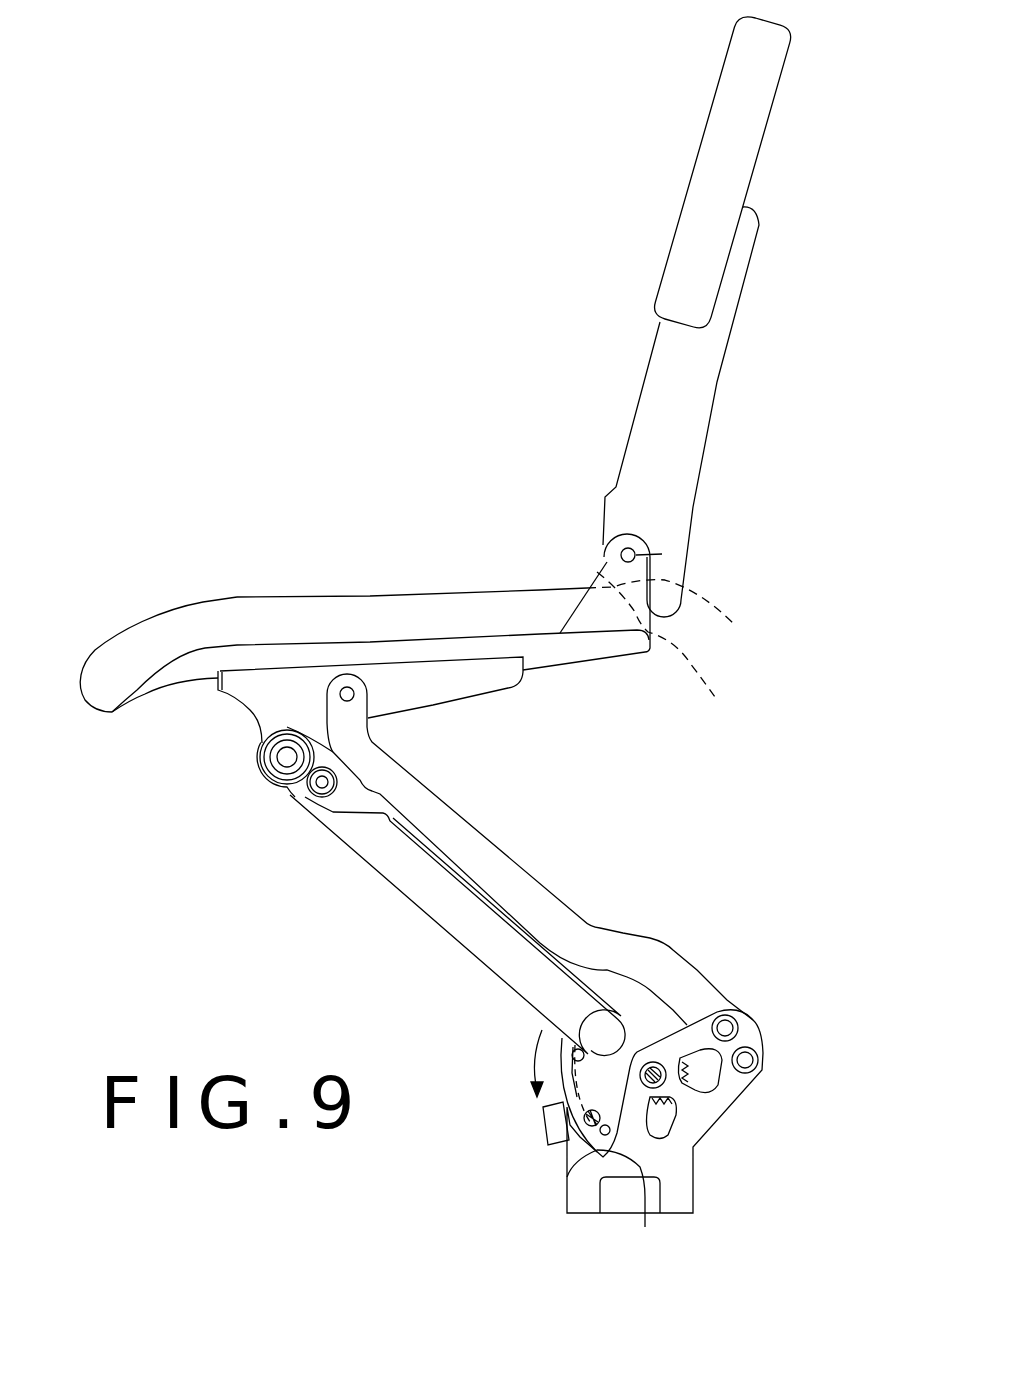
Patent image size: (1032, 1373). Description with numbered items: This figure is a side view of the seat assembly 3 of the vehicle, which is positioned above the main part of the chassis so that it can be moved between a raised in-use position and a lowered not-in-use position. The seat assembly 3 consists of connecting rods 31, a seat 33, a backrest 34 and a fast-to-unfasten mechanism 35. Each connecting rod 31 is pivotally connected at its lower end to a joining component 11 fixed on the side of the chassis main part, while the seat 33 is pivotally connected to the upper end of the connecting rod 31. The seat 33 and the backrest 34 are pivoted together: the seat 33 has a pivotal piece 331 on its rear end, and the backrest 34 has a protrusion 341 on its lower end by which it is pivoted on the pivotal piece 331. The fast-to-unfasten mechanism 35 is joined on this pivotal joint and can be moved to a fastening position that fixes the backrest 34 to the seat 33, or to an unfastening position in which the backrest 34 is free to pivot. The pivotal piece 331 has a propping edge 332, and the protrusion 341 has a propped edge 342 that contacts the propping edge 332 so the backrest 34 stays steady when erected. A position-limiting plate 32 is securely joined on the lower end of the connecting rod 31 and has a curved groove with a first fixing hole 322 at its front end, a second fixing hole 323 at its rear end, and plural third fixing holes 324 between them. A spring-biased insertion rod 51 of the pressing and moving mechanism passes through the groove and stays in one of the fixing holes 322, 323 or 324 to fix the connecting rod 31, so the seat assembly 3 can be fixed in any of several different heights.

The seat assembly 3 is at (748, 377).
The backrest 34 is at (732, 173).
The protrusion 341 is at (601, 550).
The propped edge 342 is at (696, 621).
The fast-to-unfasten mechanism 35 is at (662, 554).
The seat 33 is at (305, 612).
The pivotal piece 331 is at (590, 623).
The propping edge 332 is at (675, 666).
The connecting rod 31 is at (547, 910).
The position-limiting plate 32 is at (600, 1067).
The second fixing hole 323 is at (605, 1008).
The third fixing hole 324 is at (558, 1103).
The first fixing hole 322 is at (645, 1227).
The insertion rod 51 is at (565, 1140).
The joining component 11 is at (720, 1098).